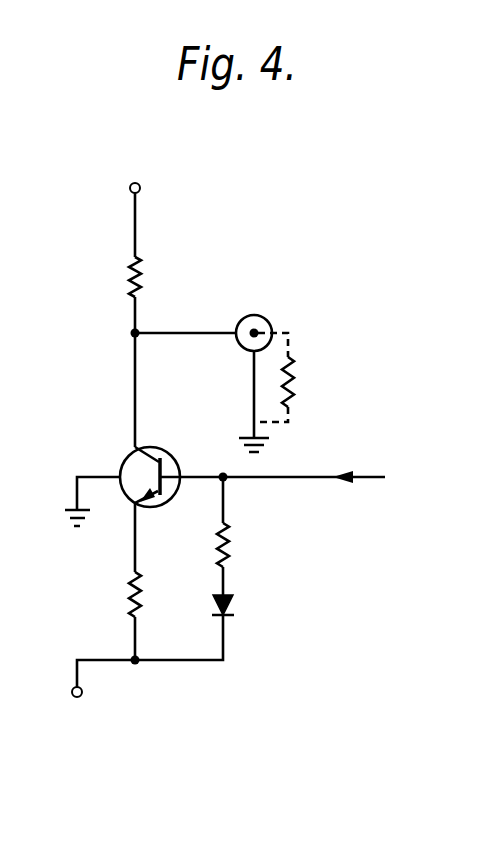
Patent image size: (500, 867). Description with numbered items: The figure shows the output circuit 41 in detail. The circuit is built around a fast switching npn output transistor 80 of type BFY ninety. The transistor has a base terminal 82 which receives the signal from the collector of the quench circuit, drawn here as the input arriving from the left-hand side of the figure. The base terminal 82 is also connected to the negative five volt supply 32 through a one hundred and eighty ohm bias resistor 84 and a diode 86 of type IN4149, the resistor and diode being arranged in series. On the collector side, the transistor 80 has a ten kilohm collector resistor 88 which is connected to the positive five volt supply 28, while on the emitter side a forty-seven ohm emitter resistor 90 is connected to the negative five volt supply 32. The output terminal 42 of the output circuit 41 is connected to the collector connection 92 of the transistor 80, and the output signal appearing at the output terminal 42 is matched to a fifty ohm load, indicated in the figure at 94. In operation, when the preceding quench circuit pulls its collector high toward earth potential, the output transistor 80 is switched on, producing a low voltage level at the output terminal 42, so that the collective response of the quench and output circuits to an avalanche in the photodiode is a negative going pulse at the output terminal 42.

The +5 V supply 28 is at (139, 184).
The −5 V supply 32 is at (81, 696).
The output circuit 41 is at (243, 228).
The output terminal 42 is at (256, 331).
The output transistor 80 is at (123, 462).
The base terminal 82 is at (226, 479).
The bias resistor 84 is at (230, 540).
The diode 86 is at (233, 604).
The collector resistor 88 is at (129, 283).
The emitter resistor 90 is at (130, 600).
The collector connection 92 is at (130, 336).
The 50 ohm load 94 is at (295, 380).